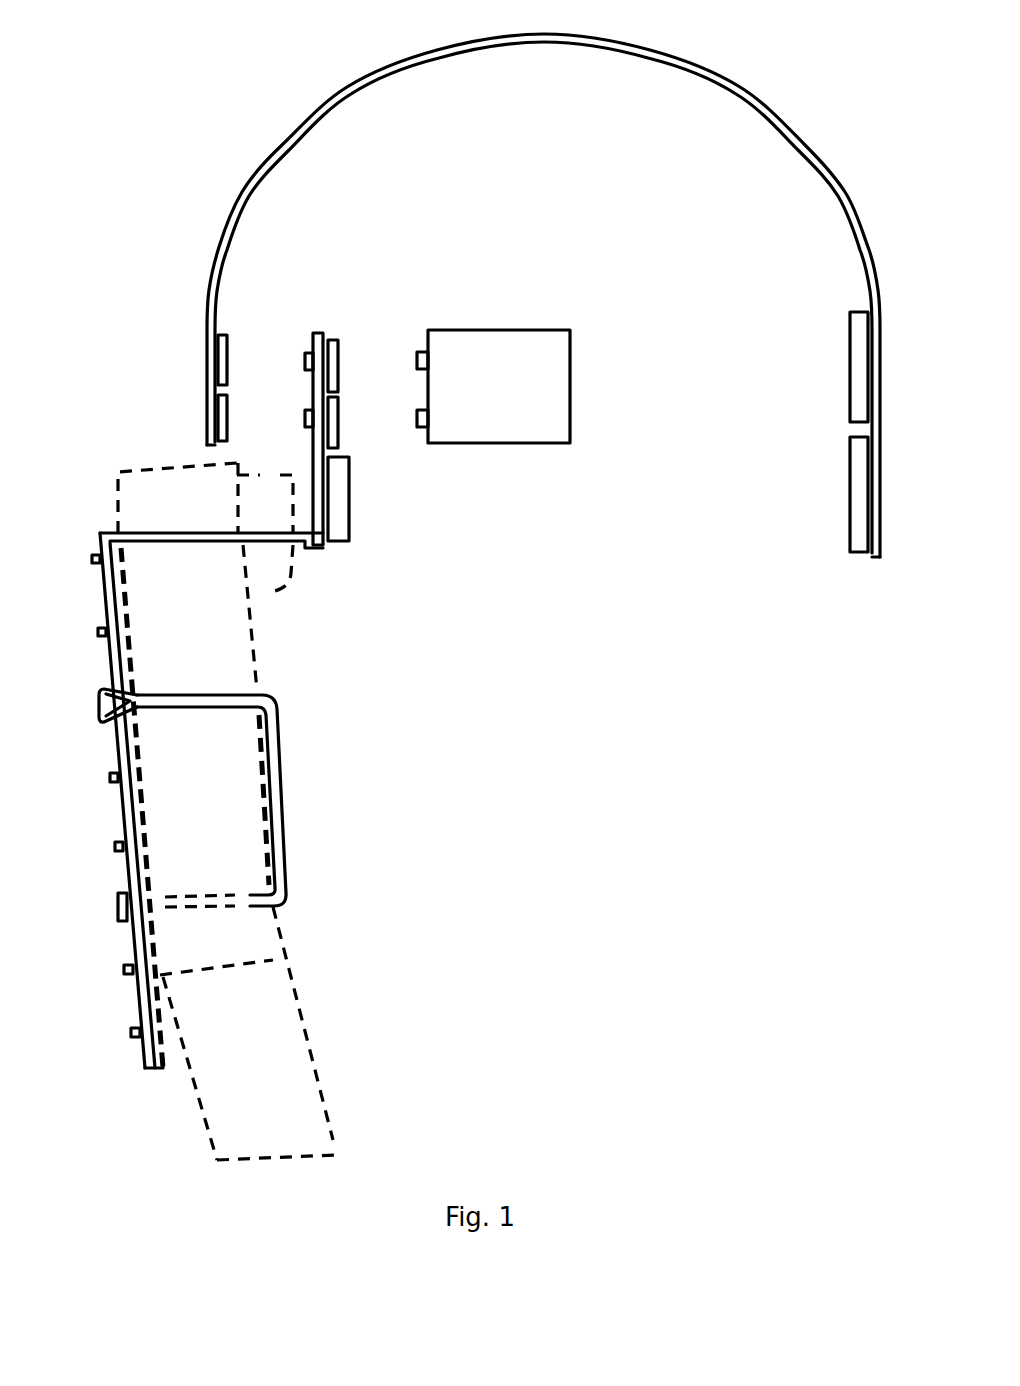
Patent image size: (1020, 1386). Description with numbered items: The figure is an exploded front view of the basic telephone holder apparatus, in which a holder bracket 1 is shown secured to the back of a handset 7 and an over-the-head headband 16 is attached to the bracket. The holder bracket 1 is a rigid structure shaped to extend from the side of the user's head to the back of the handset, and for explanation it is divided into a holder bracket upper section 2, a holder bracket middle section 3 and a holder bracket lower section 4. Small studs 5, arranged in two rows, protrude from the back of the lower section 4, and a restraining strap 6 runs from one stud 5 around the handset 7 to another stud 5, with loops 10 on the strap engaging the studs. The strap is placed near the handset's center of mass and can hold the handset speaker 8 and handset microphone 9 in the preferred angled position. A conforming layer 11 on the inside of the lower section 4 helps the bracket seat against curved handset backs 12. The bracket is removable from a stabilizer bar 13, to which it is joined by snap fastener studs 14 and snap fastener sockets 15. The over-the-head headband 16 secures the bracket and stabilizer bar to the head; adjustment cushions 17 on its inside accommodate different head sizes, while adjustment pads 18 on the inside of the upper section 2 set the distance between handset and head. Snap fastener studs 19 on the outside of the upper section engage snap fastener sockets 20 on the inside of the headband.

The holder bracket 1 is at (103, 530).
The holder bracket upper section 2 is at (318, 452).
The holder bracket middle section 3 is at (310, 548).
The holder bracket lower section 4 is at (135, 953).
The studs 5 is at (98, 630).
The restraining strap 6 is at (290, 848).
The handset 7 is at (232, 640).
The handset speaker 8 is at (292, 577).
The handset microphone 9 is at (322, 1108).
The loops 10 is at (118, 897).
The conforming layer 11 is at (157, 1068).
The handset back 12 is at (205, 1130).
The stabilizer bar 13 is at (500, 408).
The snap fastener studs 14 is at (423, 430).
The snap fastener sockets 15 is at (336, 340).
The over-the-head headband 16 is at (382, 73).
The adjustment cushions 17 is at (858, 505).
The adjustment pads 18 is at (343, 507).
The snap fastener studs 19 is at (315, 330).
The snap fastener sockets 20 is at (232, 330).